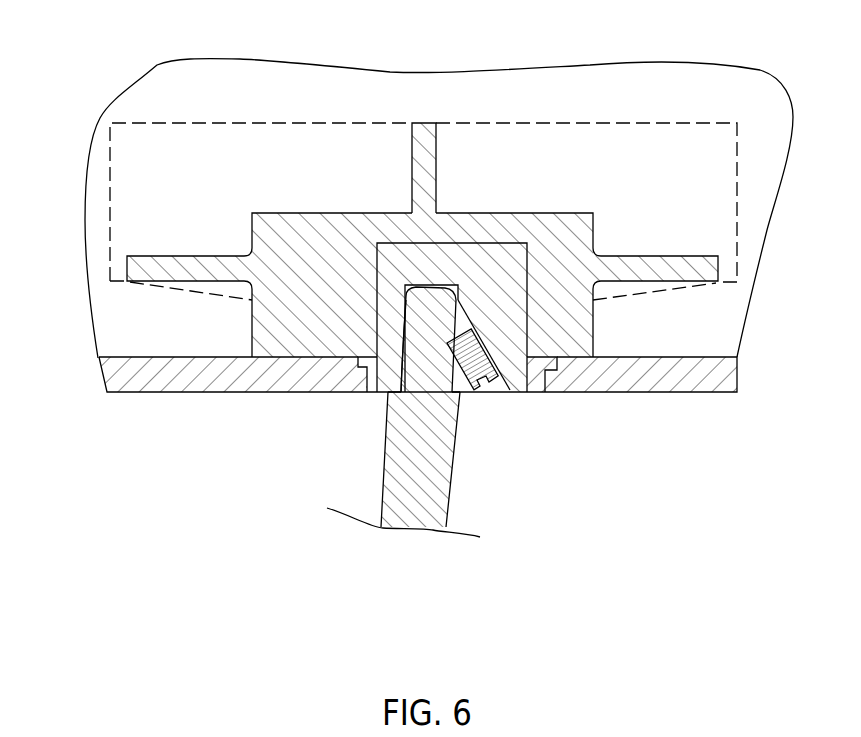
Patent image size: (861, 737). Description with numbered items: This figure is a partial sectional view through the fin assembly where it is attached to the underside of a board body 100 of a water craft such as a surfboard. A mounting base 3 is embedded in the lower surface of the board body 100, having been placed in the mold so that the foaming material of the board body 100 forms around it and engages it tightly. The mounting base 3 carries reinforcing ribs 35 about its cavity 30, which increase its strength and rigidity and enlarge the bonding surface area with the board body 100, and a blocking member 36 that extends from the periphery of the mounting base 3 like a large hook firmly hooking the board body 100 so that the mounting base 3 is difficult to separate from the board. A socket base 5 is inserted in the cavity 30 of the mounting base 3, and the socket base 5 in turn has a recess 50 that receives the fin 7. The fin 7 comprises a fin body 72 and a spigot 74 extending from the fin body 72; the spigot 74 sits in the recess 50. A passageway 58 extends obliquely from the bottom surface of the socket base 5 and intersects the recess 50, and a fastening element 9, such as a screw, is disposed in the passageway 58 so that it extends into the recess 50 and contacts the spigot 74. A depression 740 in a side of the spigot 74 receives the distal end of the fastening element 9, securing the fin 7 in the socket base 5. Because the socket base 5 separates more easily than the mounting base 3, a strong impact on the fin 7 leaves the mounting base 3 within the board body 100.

The board body 100 is at (747, 83).
The mounting base 3 is at (592, 337).
The reinforcing member or rib 35 is at (417, 137).
The blocking member 36 is at (133, 270).
The socket base 5 is at (537, 383).
The cavity 30 is at (519, 388).
The fastening element 9 is at (501, 365).
The passageway 58 is at (486, 391).
The fin 7 is at (388, 412).
The spigot 74 is at (410, 374).
The depression 740 is at (460, 393).
The fin body 72 is at (323, 425).
The recess 50 is at (407, 374).